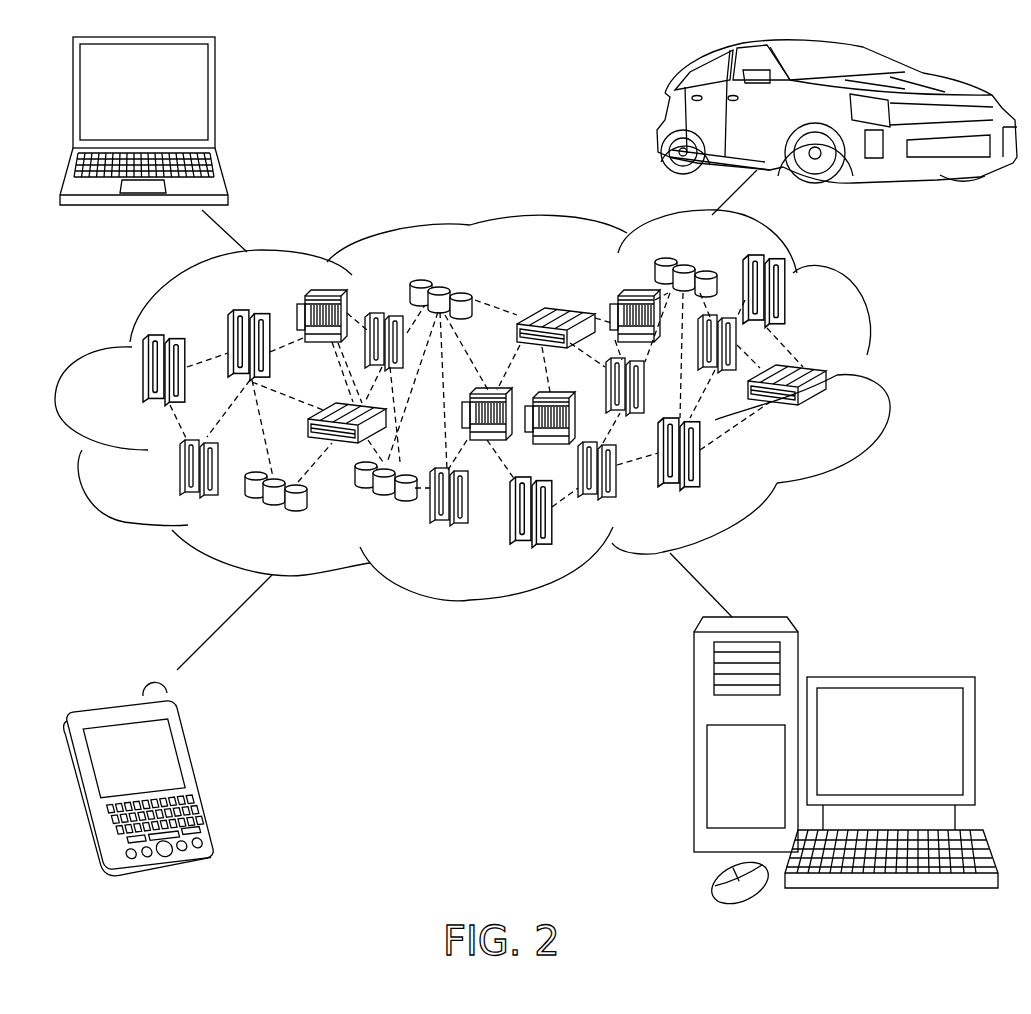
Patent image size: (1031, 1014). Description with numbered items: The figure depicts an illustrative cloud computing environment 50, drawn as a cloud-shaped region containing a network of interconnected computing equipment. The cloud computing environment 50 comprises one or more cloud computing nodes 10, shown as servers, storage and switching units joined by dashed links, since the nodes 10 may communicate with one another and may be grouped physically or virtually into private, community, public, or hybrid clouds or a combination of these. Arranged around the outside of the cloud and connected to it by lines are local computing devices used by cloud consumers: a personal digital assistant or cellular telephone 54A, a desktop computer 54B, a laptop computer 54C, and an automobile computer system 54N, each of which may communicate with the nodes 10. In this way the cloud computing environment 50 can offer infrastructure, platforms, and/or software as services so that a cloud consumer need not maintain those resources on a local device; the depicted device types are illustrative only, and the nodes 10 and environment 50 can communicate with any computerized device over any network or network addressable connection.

The cloud computing node 10 is at (828, 408).
The cloud computing environment 50 is at (890, 378).
The personal digital assistant or cellular telephone 54A is at (202, 770).
The desktop computer 54B is at (888, 677).
The laptop computer 54C is at (215, 100).
The automobile computer system 54N is at (661, 118).